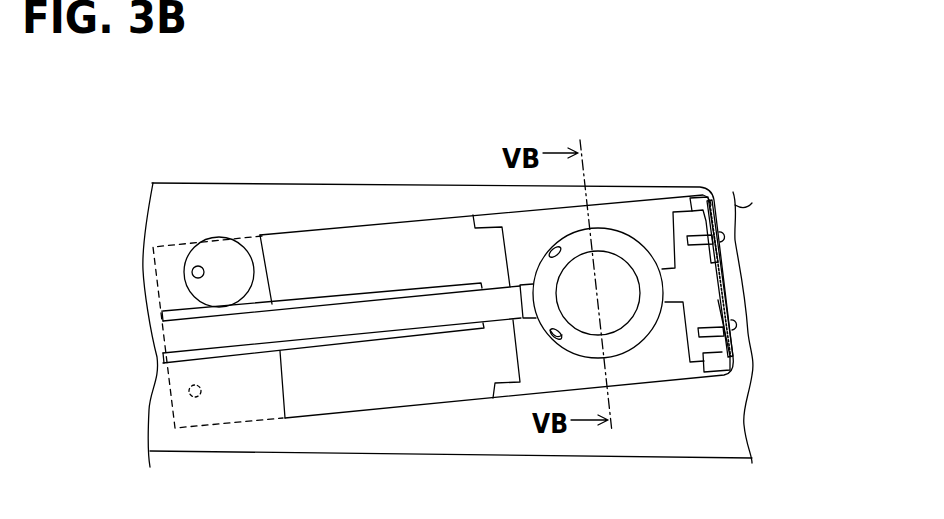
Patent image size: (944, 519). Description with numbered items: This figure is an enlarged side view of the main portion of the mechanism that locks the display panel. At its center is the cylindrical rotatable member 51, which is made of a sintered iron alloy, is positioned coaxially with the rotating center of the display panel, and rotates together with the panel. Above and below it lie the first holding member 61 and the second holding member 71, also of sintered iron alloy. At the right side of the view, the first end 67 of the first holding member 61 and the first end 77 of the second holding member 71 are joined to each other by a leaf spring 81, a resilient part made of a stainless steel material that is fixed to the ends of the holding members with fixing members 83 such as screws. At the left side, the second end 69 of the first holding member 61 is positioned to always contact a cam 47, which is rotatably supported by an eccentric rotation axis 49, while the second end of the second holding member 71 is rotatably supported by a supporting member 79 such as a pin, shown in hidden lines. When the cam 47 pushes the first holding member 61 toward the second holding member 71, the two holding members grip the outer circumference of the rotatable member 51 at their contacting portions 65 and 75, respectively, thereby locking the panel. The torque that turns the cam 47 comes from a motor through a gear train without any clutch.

The cam 47 is at (228, 258).
The eccentric rotation axis 49 is at (195, 267).
The cylindrical rotatable member 51 is at (637, 253).
The first holding member 61 is at (385, 242).
The contacting portion 65 is at (547, 258).
The first end 67 is at (697, 208).
The second end 69 is at (180, 312).
The second holding member 71 is at (393, 385).
The contacting portion 75 is at (555, 332).
The first end 77 is at (700, 377).
The supporting member 79 is at (188, 388).
The leaf spring 81 is at (723, 282).
The fixing members 83 is at (727, 233).